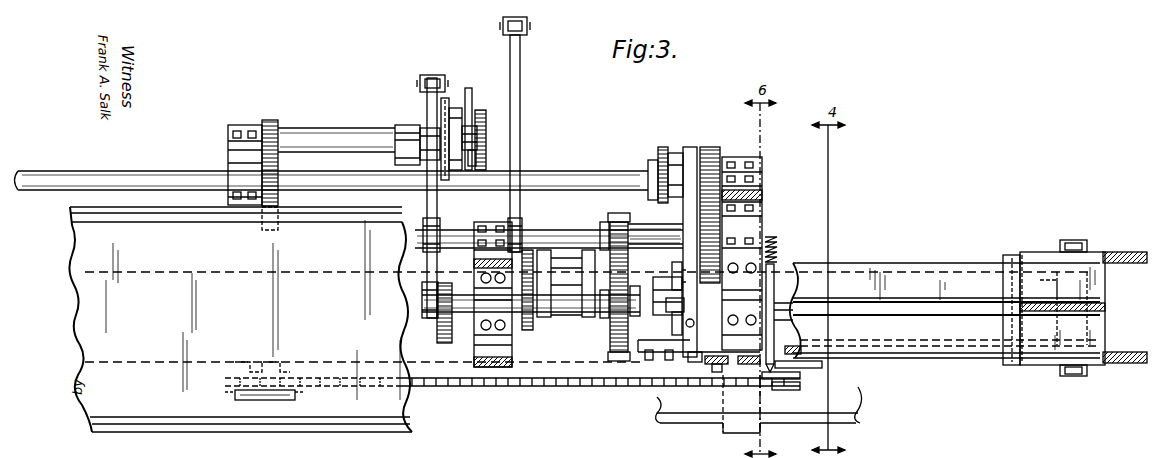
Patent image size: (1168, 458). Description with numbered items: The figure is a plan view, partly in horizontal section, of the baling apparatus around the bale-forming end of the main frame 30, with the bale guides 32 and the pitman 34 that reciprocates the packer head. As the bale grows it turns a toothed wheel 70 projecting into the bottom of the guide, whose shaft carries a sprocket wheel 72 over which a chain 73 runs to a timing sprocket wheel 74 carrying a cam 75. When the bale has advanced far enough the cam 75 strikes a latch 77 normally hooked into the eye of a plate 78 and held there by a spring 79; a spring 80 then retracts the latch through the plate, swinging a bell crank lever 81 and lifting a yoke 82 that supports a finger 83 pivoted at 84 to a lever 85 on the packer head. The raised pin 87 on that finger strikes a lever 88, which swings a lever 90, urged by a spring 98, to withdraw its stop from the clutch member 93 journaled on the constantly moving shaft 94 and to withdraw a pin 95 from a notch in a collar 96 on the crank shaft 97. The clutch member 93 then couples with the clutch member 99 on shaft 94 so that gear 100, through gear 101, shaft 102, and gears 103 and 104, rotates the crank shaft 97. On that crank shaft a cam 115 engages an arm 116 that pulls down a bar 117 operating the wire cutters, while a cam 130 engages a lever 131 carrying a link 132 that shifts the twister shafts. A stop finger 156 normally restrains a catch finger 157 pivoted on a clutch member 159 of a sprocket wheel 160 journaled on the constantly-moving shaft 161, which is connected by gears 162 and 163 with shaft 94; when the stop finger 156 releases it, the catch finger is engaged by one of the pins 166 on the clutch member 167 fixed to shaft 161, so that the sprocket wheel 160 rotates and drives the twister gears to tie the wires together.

The bale-forming end of the main frame 30 is at (857, 427).
The bale guides 32 is at (347, 219).
The pitman 34 is at (878, 311).
The toothed wheel 70 is at (259, 401).
The sprocket wheel 72 is at (236, 386).
The chain 73 is at (541, 384).
The timing sprocket wheel 74 is at (797, 383).
The cam 75 is at (782, 370).
The latch 77 is at (796, 351).
The plate 78 is at (783, 363).
The spring 79 is at (832, 346).
The spring 80 is at (778, 255).
The bell crank lever 81 is at (762, 303).
The yoke 82 is at (778, 347).
The finger 83 is at (669, 360).
The pivot 84 is at (1012, 368).
The lever 85 is at (1046, 366).
The pin 87 is at (650, 360).
The lever 88 is at (702, 362).
The lever 90 is at (775, 233).
The clutch member 93 is at (692, 150).
The shaft 94 is at (586, 170).
The pin 95 is at (692, 302).
The collar 96 is at (677, 272).
The crank shaft 97 is at (620, 318).
The spring 98 is at (681, 331).
The clutch member 99 is at (657, 150).
The gear 100 is at (713, 151).
The gear 101 is at (720, 228).
The shaft 102 is at (668, 231).
The gear 103 is at (618, 214).
The gear 104 is at (618, 358).
The cam 115 is at (525, 325).
The arm 116 is at (521, 157).
The bar 117 is at (522, 37).
The cam 130 is at (447, 344).
The lever 131 is at (432, 76).
The link 132 is at (421, 85).
The stop finger 156 is at (471, 97).
The catch finger 157 is at (474, 117).
The clutch member 159 is at (452, 110).
The sprocket wheel 160 is at (445, 100).
The shaft 161 is at (370, 133).
The gear 162 is at (277, 123).
The gear 163 is at (279, 157).
The pins 166 is at (472, 152).
The clutch member 167 is at (484, 144).